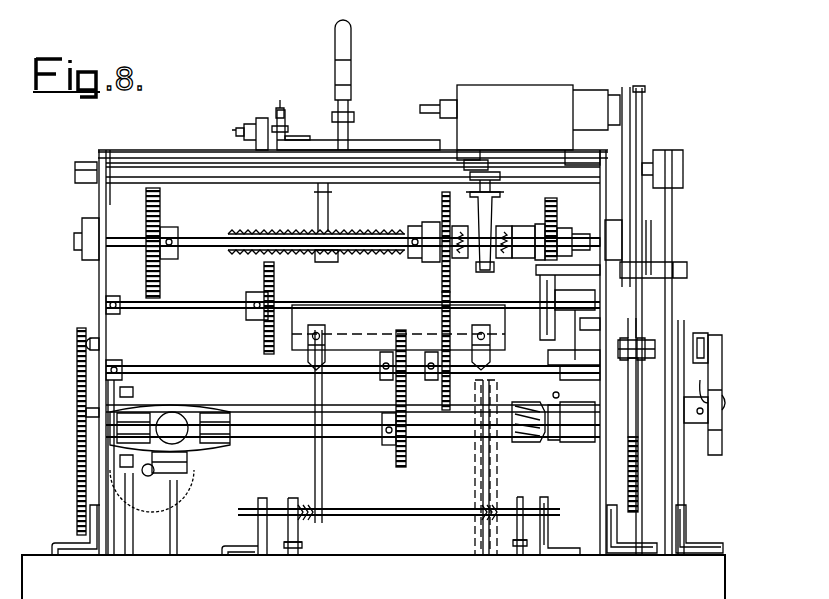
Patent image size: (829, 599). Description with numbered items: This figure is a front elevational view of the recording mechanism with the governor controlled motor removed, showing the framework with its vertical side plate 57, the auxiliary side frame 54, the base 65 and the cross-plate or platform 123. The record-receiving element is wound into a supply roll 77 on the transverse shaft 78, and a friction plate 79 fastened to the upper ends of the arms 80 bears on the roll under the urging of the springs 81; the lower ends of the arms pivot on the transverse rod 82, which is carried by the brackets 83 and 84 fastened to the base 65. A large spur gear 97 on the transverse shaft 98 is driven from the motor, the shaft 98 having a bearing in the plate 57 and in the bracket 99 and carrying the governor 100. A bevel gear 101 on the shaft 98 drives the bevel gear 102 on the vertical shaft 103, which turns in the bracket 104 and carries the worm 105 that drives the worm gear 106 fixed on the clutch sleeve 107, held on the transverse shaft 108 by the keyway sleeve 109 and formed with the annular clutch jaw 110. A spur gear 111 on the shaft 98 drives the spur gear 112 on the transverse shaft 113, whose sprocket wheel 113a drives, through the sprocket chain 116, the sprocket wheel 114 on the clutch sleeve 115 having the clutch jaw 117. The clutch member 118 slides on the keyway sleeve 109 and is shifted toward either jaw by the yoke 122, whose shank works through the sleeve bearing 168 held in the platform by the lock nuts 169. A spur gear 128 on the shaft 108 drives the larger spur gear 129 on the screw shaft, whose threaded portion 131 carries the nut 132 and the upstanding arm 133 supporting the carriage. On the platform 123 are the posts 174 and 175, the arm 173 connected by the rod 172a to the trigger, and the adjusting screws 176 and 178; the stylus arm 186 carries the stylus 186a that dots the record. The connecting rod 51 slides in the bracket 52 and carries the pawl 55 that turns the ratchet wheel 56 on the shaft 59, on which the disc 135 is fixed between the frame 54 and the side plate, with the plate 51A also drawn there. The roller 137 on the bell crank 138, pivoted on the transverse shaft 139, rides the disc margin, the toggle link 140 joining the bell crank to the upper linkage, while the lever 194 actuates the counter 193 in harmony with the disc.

The base 65 is at (725, 577).
The vertical side plate 57 is at (97, 286).
The cross-plate 123 is at (175, 162).
The bracket 83 is at (262, 538).
The bracket 84 is at (322, 545).
The transverse shaft 108 is at (200, 235).
The transverse shaft 78 is at (236, 312).
The transverse shaft 113 is at (222, 362).
The shaft 59 is at (278, 408).
The transverse shaft 98 is at (255, 437).
The transverse rod 82 is at (410, 503).
The spur gear 129 is at (162, 193).
The spur gear 128 is at (166, 263).
The externally threaded portion 131 is at (302, 257).
The upstanding arm 133 is at (320, 200).
The nut 132 is at (330, 230).
The supply roll 77 is at (283, 338).
The friction plate 79 is at (385, 308).
The spur gear 112 is at (394, 389).
The spur gear 111 is at (390, 455).
The sprocket wheel 113a is at (438, 393).
The sprocket wheel 114 is at (438, 211).
The sprocket chain 116 is at (452, 298).
The clutch sleeve 115 is at (426, 268).
The clutch jaw 117 is at (462, 226).
The yoke 122 is at (487, 206).
The clutch member 118 is at (482, 272).
The keyway sleeve 109 is at (504, 226).
The clutch jaw 110 is at (508, 264).
The clutch sleeve 107 is at (525, 232).
The worm gear 106 is at (573, 198).
The worm 105 is at (560, 222).
The sleeve bearing 168 is at (460, 197).
The lock nuts 169 is at (470, 158).
The bracket 104 is at (590, 330).
The vertical shaft 103 is at (571, 345).
The stylus 186a is at (353, 72).
The stylus arm 186 is at (353, 118).
The rod 172a is at (375, 136).
The post 174 is at (282, 106).
The adjusting screw 178 is at (290, 122).
The arm 173 is at (318, 133).
The upstanding post 175 is at (262, 112).
The adjusting screw 176 is at (238, 126).
The counter 193 is at (546, 86).
The lever 194 is at (644, 140).
The toggle link 140 is at (653, 228).
The transverse shaft 139 is at (674, 268).
The bell crank 138 is at (644, 292).
The auxiliary side frame 54 is at (636, 332).
The roller 137 is at (632, 345).
The connecting rod 51 is at (702, 332).
The pawl 55 is at (722, 355).
The ratchet wheel 56 is at (718, 380).
The bracket 52 is at (724, 405).
The disc 135 is at (640, 468).
The plate 51A is at (686, 492).
The spur gear 97 is at (75, 386).
The governor 100 is at (176, 415).
The bracket 99 is at (470, 460).
The arm 80 is at (313, 468).
The spring 81 is at (308, 525).
The bevel gear 101 is at (548, 442).
The bevel gear 102 is at (572, 432).